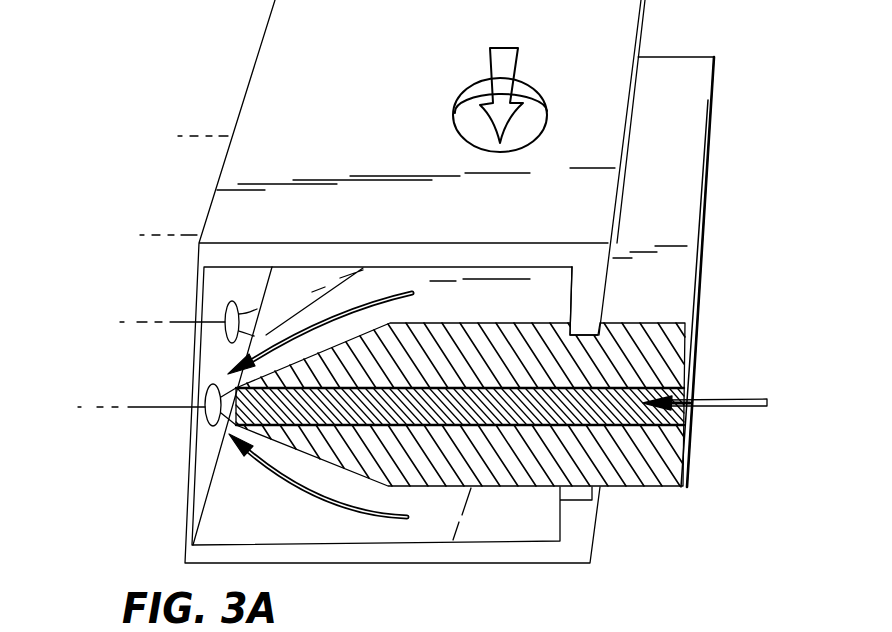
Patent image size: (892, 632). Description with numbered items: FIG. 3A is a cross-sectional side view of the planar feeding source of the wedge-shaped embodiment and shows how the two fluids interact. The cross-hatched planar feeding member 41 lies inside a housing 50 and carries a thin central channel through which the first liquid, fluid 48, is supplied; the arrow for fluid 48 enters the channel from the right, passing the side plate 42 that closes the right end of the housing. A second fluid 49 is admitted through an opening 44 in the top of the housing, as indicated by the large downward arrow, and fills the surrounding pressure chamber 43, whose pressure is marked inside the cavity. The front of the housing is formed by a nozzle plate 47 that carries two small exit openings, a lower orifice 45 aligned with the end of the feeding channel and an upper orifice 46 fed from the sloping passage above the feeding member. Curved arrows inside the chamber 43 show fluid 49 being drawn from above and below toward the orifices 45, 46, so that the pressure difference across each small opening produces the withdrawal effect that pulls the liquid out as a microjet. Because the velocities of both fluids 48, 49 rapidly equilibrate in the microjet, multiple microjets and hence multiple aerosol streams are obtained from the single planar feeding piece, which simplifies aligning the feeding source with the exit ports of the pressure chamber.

The heater block 41 is at (689, 322).
The side plate 42 is at (691, 369).
The chamber at pressure P0 43 is at (307, 532).
The inlet opening 44 is at (553, 112).
The lower nozzle orifice 45 is at (210, 427).
The upper nozzle orifice 46 is at (208, 392).
The nozzle plate 47 is at (86, 393).
The fluid 48 is at (757, 397).
The fluid 49 is at (491, 61).
The housing 50 is at (188, 478).